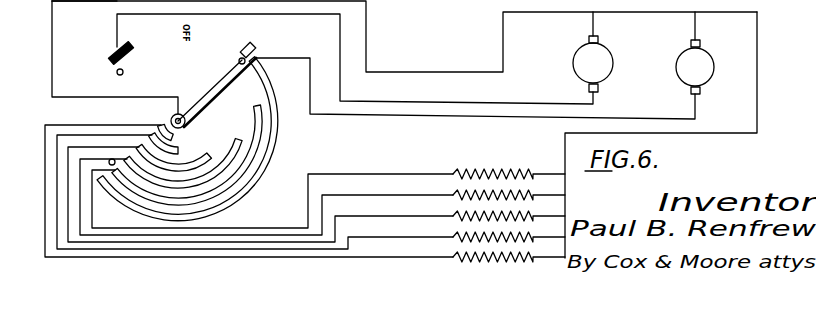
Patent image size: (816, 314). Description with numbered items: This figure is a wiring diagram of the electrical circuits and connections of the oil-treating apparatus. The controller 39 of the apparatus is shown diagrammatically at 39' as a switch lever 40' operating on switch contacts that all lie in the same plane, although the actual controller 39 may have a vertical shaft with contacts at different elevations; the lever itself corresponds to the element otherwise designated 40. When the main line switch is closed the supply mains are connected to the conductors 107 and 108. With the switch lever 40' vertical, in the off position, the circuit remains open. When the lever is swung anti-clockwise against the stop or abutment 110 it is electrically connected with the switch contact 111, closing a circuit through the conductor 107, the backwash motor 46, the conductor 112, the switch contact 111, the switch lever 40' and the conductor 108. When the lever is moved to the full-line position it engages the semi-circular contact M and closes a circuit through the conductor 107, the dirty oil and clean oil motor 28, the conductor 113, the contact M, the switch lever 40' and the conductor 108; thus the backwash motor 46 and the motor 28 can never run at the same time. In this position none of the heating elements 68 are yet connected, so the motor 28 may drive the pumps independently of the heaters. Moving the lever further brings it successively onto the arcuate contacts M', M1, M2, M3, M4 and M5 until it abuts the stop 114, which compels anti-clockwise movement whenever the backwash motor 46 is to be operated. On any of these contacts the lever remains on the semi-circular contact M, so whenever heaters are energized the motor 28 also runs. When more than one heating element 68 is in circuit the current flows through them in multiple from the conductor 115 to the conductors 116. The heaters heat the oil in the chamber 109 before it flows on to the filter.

The conductor 107 is at (92, 0).
The conductor 108 is at (52, 57).
The chamber 109 is at (463, 0).
The stop or abutment 110 is at (124, 72).
The switch contact 111 is at (156, 36).
The conductor 112 is at (390, 94).
The conductor 113 is at (387, 115).
The stop 114 is at (112, 159).
The conductor 115 is at (757, 127).
The conductors 116 is at (393, 237).
The heating elements 68 is at (507, 257).
The backwash motor 46 is at (576, 77).
The dirty oil and clean oil motor 28 is at (702, 84).
The controller 39' is at (213, 92).
The controller 39 is at (213, 92).
The switch lever 40' is at (210, 73).
The switch arm contact blade 40 is at (210, 73).
The semi-circular contact M is at (255, 45).
The arcuate contact M' is at (187, 145).
The arcuate contact M1 is at (187, 145).
The arcuate contact M2 is at (239, 139).
The arcuate contact M3 is at (210, 157).
The arcuate contact M4 is at (182, 150).
The arcuate contact M5 is at (181, 132).